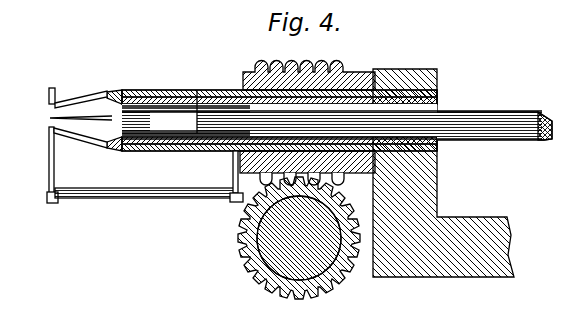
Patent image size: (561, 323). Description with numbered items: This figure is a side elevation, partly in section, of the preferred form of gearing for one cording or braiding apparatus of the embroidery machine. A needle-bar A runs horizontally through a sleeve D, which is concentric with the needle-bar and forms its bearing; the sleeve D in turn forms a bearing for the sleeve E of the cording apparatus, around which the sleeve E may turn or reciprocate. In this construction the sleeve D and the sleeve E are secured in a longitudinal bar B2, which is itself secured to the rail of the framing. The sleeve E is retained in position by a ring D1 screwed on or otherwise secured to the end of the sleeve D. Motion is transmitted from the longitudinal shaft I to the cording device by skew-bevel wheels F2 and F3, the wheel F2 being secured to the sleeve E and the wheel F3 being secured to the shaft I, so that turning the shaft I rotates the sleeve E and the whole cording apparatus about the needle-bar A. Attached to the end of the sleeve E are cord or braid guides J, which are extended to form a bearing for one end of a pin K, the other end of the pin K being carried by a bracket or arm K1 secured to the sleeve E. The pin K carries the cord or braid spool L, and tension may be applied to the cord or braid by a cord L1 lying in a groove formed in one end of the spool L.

The needle-bar A is at (488, 122).
The sleeve D is at (440, 108).
The ring D1 is at (151, 91).
The sleeve E is at (197, 90).
The cord or braid guide J is at (49, 93).
The pin K is at (148, 199).
The bracket or arm K1 is at (232, 168).
The skew-bevel wheel F2 is at (307, 113).
The skew-bevel wheel F3 is at (322, 290).
The longitudinal shaft I is at (299, 238).
The longitudinal bar B2 is at (437, 201).
The cord or braid spool L is at (107, 313).
The cord L1 is at (219, 311).